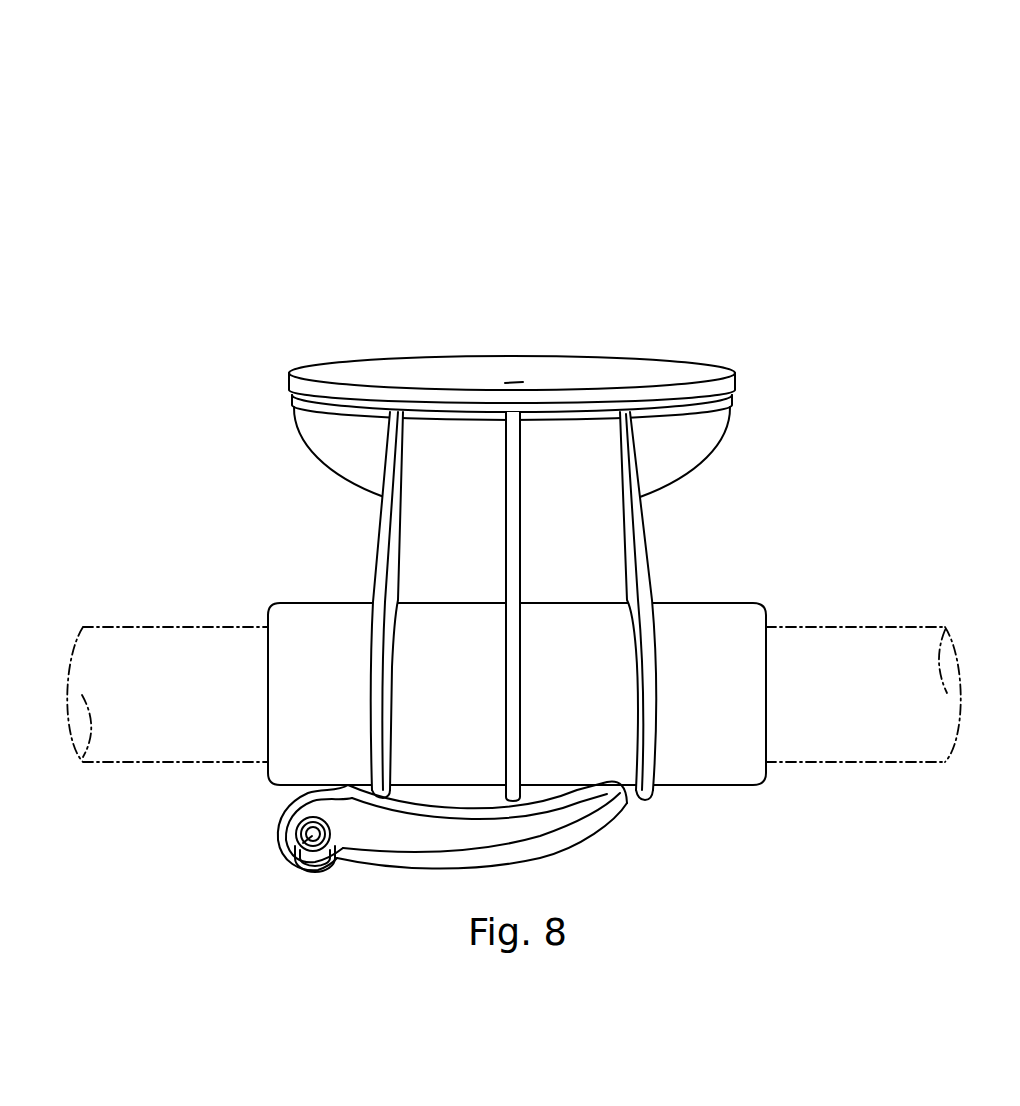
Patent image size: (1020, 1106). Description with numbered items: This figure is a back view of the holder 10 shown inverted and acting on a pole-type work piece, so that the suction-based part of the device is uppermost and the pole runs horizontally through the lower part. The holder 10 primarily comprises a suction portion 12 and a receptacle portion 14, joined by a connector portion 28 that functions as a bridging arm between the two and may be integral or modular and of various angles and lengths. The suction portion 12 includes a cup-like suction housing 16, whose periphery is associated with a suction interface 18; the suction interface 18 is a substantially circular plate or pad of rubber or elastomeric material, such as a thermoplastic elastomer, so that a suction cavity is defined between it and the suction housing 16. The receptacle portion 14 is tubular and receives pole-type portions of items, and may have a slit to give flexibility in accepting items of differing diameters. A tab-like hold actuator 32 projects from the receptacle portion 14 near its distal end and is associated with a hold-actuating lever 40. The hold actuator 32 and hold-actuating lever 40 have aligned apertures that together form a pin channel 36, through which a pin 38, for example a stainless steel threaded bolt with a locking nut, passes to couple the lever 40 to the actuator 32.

The holder 10 is at (363, 117).
The suction portion 12 is at (683, 287).
The receptacle portion 14 is at (610, 763).
The suction housing 16 is at (693, 443).
The suction interface 18 is at (444, 368).
The connector portion 28 is at (587, 542).
The hold actuator 32 is at (287, 788).
The pin channel 36 is at (337, 856).
The pin 38 is at (307, 842).
The hold-actuating lever 40 is at (463, 858).